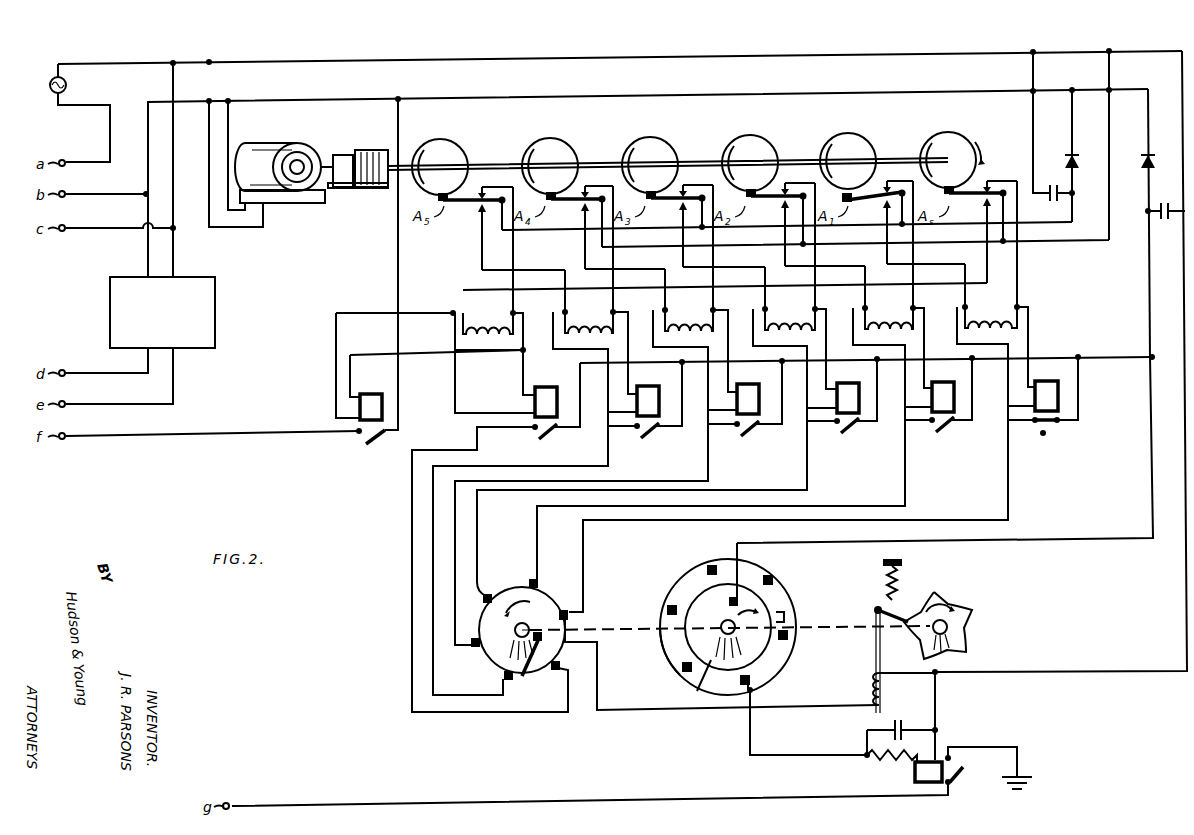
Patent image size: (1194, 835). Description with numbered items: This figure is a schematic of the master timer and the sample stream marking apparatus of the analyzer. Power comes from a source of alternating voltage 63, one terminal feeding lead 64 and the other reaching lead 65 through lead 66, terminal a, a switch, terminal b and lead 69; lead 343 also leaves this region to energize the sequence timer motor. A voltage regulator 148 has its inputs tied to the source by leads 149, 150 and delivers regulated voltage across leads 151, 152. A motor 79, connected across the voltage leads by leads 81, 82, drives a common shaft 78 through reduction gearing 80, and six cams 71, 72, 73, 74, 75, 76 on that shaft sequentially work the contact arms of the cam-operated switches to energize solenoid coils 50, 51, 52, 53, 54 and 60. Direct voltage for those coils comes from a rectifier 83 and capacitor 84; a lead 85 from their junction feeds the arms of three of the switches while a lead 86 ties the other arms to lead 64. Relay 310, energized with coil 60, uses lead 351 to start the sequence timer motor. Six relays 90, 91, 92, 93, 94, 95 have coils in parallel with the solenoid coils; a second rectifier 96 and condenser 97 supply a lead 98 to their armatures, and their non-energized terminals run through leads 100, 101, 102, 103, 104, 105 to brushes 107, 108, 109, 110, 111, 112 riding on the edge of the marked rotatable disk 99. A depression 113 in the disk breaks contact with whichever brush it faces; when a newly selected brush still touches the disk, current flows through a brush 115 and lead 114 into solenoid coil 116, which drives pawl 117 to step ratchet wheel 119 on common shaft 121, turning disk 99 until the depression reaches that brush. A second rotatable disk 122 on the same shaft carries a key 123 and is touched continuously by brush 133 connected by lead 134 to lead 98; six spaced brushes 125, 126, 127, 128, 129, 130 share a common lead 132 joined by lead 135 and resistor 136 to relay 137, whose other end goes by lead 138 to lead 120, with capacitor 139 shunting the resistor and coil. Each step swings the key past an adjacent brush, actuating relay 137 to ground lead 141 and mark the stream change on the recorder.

The source of alternating voltage 63 is at (67, 86).
The lead 64 is at (114, 61).
The lead 65 is at (151, 95).
The lead 66 is at (108, 123).
The lead 69 is at (138, 193).
The lead 343 is at (72, 232).
The lead 150 is at (146, 259).
The lead 149 is at (170, 259).
The voltage regulator 148 is at (215, 305).
The lead 152 is at (95, 348).
The lead 151 is at (95, 379).
The lead 351 is at (186, 440).
The lead 82 is at (266, 153).
The motor 79 is at (293, 145).
The reduction gearing 80 is at (354, 150).
The lead 81 is at (232, 232).
The common shaft 78 is at (484, 160).
The cam 75 is at (452, 144).
The cam 74 is at (556, 142).
The cam 73 is at (642, 139).
The cam 72 is at (756, 137).
The cam 71 is at (848, 134).
The cam 76 is at (947, 133).
The rectifier 83 is at (1074, 173).
The capacitor 84 is at (1045, 201).
The lead 85 is at (1072, 224).
The lead 86 is at (1058, 241).
The rectifier 96 is at (1148, 173).
The condenser 97 is at (1152, 223).
The lead 98 is at (1093, 358).
The solenoid coil 60 is at (483, 316).
The solenoid coil 54 is at (589, 315).
The solenoid coil 53 is at (689, 313).
The solenoid coil 52 is at (790, 312).
The solenoid coil 51 is at (889, 311).
The solenoid coil 50 is at (991, 310).
The relay 310 is at (359, 393).
The relay 95 is at (540, 389).
The relay 94 is at (640, 388).
The relay 93 is at (740, 386).
The relay 92 is at (840, 385).
The relay 91 is at (935, 384).
The relay 90 is at (1038, 383).
The lead 105 is at (410, 478).
The lead 104 is at (609, 463).
The lead 103 is at (709, 460).
The lead 102 is at (808, 464).
The lead 101 is at (906, 462).
The lead 100 is at (1009, 462).
The rotatable disk 99 is at (513, 588).
The brush 115 is at (519, 678).
The brush 108 is at (538, 586).
The brush 109 is at (488, 595).
The brush 110 is at (472, 650).
The brush 111 is at (504, 678).
The brush 112 is at (558, 666).
The brush 107 is at (570, 617).
The depression 113 is at (583, 600).
The lead 114 is at (603, 712).
The brush 133 is at (728, 603).
The brush 126 is at (707, 568).
The brush 125 is at (773, 581).
The brush 127 is at (669, 607).
The key 123 is at (784, 616).
The brush 130 is at (782, 643).
The common lead 132 is at (662, 652).
The brush 128 is at (680, 674).
The second rotatable disk 122 is at (700, 690).
The brush 129 is at (752, 681).
The lead 135 is at (748, 739).
The ratchet wheel 119 is at (972, 598).
The common shaft 121 is at (849, 626).
The pawl 117 is at (876, 616).
The solenoid coil 116 is at (870, 684).
The lead 138 is at (938, 709).
The capacitor 139 is at (895, 721).
The resistor 136 is at (867, 759).
The relay 137 is at (915, 778).
The lead 141 is at (731, 798).
The lead 134 is at (1073, 541).
The lead 120 is at (1068, 675).